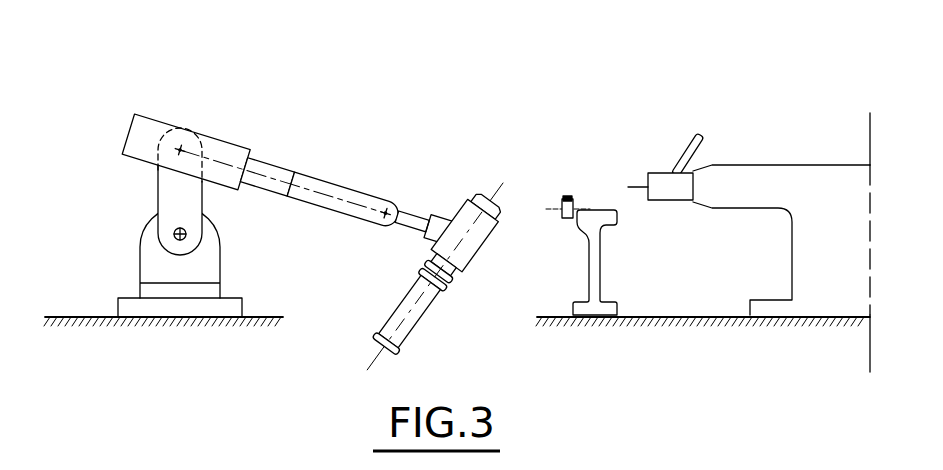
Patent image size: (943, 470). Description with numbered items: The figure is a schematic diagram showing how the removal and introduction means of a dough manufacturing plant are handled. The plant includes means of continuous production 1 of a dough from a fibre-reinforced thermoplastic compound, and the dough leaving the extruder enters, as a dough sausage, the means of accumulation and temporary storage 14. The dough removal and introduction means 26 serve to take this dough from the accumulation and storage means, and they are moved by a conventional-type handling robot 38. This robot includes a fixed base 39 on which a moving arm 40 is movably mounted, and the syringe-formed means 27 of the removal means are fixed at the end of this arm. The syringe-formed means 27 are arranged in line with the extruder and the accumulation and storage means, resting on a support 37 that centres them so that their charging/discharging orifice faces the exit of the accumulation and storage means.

The means of continuous production of a dough 1 is at (825, 125).
The means of accumulation and of temporary storage 14 is at (722, 99).
The dough removal and introduction means 26 is at (294, 125).
The syringe-formed means 27 is at (464, 303).
The support 37 is at (618, 263).
The handling robot 38 is at (172, 101).
The fixed base 39 is at (119, 255).
The moving arm 40 is at (315, 227).